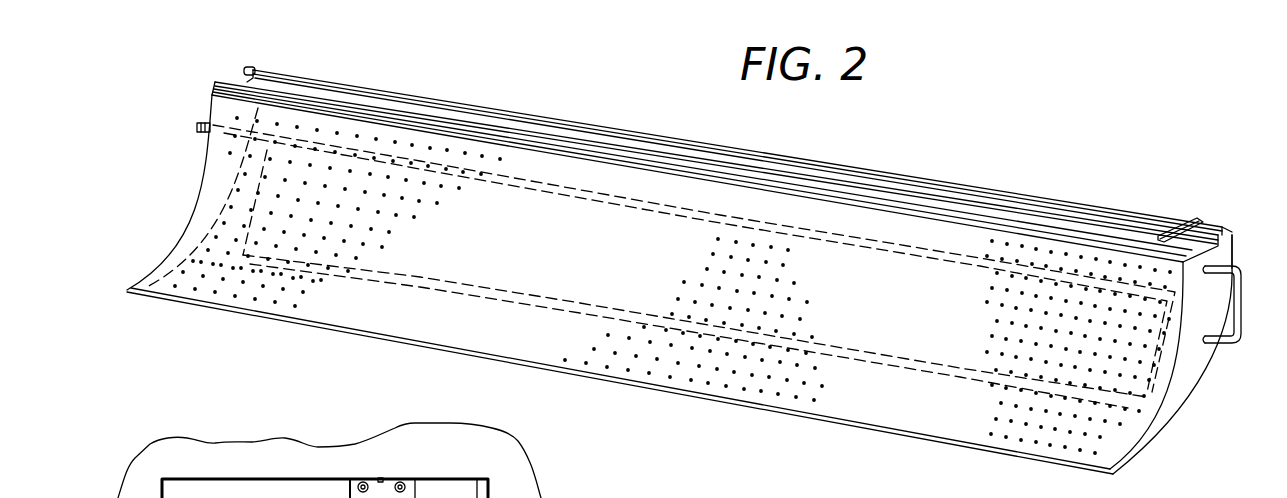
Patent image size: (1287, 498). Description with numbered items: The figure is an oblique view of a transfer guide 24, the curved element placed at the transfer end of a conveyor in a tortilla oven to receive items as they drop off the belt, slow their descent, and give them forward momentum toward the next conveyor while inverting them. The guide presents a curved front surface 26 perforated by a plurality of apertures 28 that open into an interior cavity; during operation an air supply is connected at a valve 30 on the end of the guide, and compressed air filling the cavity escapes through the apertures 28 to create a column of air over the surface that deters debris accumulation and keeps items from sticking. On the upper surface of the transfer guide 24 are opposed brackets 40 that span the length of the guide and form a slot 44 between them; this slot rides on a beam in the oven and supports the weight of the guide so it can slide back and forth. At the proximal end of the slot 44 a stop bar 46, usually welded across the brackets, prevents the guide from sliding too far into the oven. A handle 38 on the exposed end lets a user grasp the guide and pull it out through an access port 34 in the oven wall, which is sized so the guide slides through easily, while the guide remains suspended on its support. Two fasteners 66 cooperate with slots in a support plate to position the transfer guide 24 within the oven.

The transfer guide 24 is at (1233, 252).
The curved front surface 26 is at (891, 330).
The apertures 28 is at (673, 347).
The valve 30 is at (199, 127).
The access port 34 is at (247, 477).
The handle 38 is at (1238, 306).
The opposed brackets 40 is at (246, 72).
The slot 44 is at (1131, 223).
The stop bar 46 is at (1185, 220).
The fasteners 66 is at (367, 476).